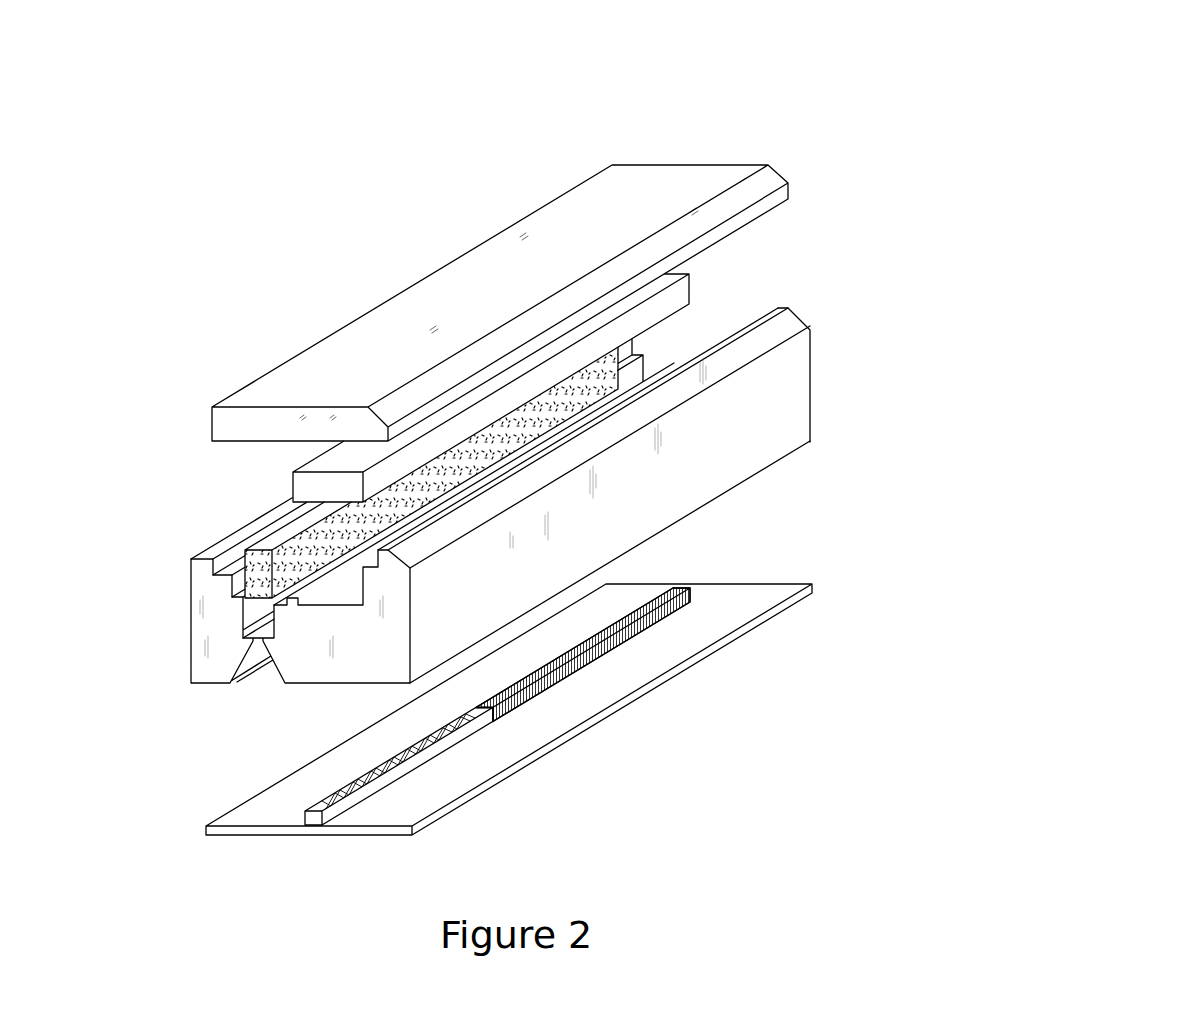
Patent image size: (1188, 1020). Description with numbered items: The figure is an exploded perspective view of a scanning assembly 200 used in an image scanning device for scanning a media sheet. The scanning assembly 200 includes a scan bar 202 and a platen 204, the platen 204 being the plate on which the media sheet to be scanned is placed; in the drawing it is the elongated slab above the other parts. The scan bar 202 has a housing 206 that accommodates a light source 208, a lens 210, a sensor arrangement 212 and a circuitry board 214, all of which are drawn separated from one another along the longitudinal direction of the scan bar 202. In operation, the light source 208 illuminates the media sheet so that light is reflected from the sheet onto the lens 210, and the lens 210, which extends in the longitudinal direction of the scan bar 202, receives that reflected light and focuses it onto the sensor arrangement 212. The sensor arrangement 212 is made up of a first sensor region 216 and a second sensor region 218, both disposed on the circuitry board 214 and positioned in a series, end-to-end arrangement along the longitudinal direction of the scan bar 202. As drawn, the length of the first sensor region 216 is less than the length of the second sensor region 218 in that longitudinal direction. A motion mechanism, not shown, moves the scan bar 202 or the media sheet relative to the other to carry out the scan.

The scanning assembly 200 is at (983, 137).
The scan bar 202 is at (833, 270).
The platen 204 is at (673, 173).
The housing 206 is at (813, 392).
The light source 208 is at (680, 292).
The lens 210 is at (273, 542).
The sensor arrangement 212 is at (490, 734).
The circuitry board 214 is at (772, 590).
The first sensor region 216 is at (305, 811).
The second sensor region 218 is at (665, 588).